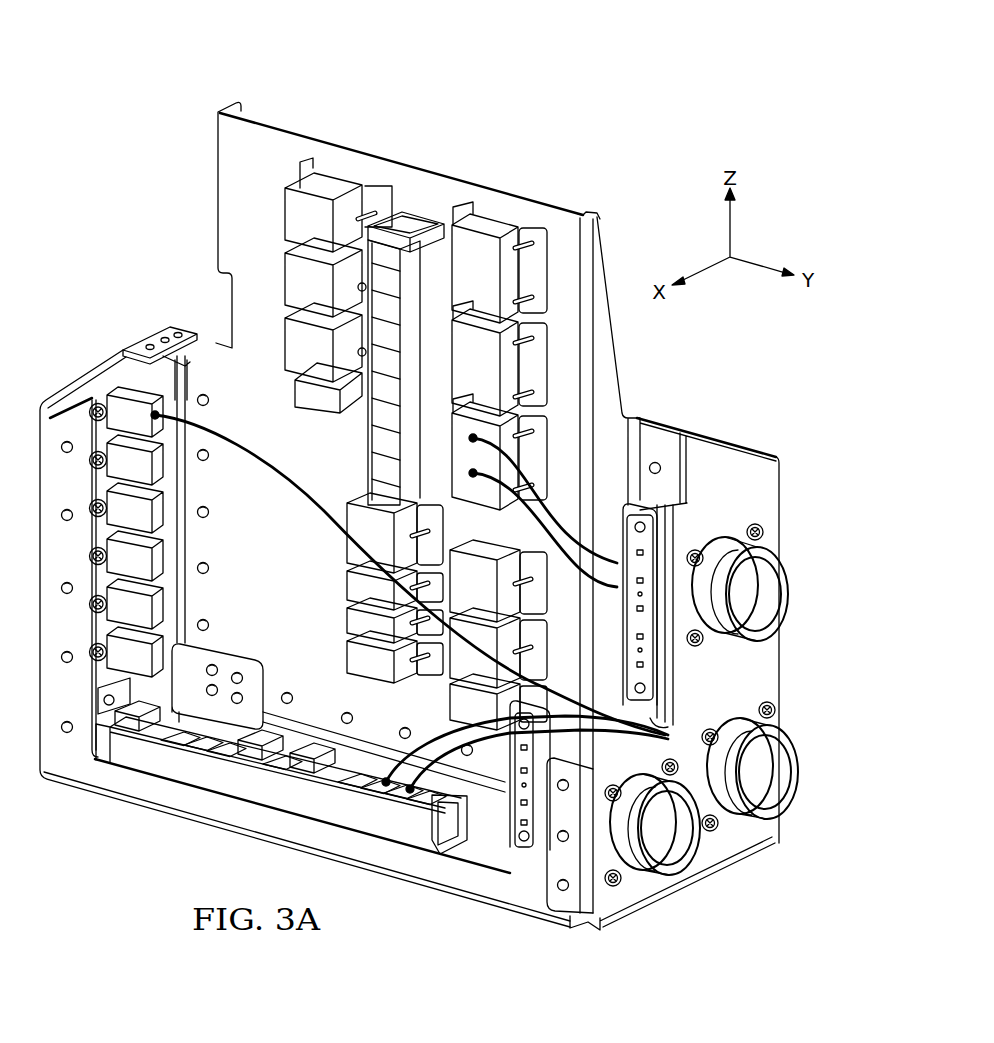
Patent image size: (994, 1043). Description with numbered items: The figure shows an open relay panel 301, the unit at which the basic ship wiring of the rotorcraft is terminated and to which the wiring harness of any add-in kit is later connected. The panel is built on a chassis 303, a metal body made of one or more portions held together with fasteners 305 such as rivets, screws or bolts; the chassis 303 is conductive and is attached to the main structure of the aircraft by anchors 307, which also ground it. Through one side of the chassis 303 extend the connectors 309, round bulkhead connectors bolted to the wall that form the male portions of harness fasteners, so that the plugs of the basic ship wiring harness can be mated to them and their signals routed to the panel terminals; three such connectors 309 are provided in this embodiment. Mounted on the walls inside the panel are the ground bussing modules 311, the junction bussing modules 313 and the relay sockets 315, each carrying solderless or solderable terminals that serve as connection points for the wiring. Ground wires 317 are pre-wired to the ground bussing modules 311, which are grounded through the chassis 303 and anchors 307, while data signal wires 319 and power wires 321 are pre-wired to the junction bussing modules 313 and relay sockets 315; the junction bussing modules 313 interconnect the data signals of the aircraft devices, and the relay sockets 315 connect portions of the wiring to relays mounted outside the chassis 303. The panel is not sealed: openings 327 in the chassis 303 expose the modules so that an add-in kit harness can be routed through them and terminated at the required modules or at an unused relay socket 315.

The open relay panel 301 is at (553, 72).
The chassis 303 is at (733, 428).
The fasteners 305 is at (344, 711).
The anchors 307 is at (160, 336).
The connectors 309 is at (787, 542).
The ground bussing modules 311 is at (190, 400).
The junction bussing modules 313 is at (263, 698).
The relay sockets 315 is at (335, 178).
The ground wires 317 is at (273, 467).
The data signal wires 319 is at (574, 566).
The power wires 321 is at (557, 520).
The openings 327 is at (175, 213).